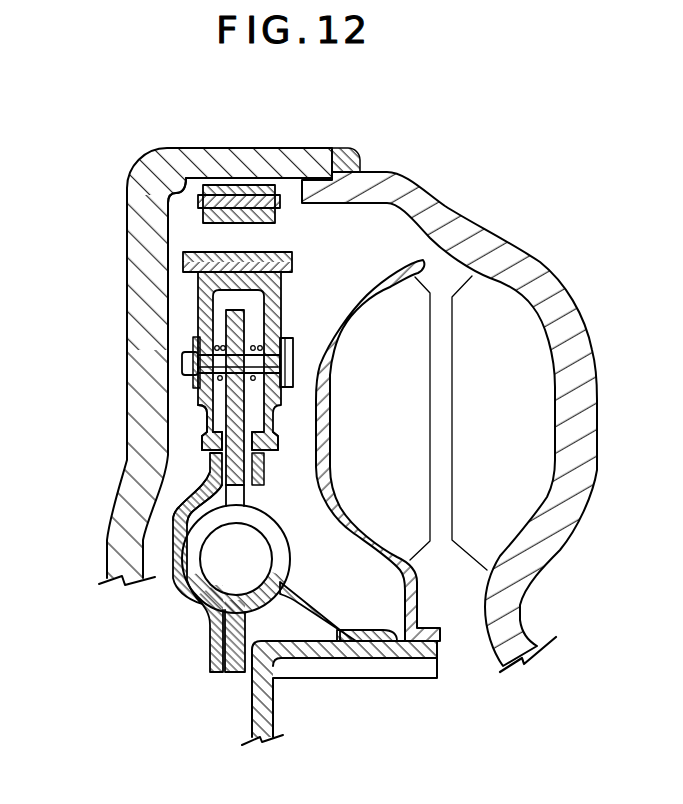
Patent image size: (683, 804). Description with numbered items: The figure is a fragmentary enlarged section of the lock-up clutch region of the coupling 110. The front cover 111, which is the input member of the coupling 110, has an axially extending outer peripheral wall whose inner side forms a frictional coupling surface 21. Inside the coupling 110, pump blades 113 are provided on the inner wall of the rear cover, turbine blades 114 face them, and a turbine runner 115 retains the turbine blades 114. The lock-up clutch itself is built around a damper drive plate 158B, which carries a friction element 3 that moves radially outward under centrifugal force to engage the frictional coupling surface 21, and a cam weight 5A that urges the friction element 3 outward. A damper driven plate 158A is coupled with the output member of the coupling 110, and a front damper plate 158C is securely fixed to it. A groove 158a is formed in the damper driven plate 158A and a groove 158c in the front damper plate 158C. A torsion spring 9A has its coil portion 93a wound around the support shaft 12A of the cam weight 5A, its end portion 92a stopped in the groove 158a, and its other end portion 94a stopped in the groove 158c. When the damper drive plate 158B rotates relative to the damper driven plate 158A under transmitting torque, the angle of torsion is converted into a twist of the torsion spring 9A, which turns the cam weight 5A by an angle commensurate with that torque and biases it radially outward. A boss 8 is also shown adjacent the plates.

The front cover 111 is at (217, 160).
The friction element 3 is at (296, 196).
The frictional coupling surface 21 is at (130, 196).
The coupling 110 is at (536, 244).
The turbine runner 115 is at (391, 267).
The cam weight 5A is at (284, 296).
The support shaft 12A is at (130, 302).
The coil portion 93a is at (196, 347).
The torsion spring 9A is at (184, 359).
The groove 158a is at (203, 411).
The end portion 94a is at (205, 437).
The groove 158c is at (208, 449).
The front damper plate 158C is at (193, 488).
The damper drive plate 158B is at (174, 507).
The end portion 92a is at (273, 451).
The boss 8 is at (203, 586).
The damper driven plate 158A is at (305, 593).
The turbine blades 114 is at (400, 419).
The pump blades 113 is at (510, 419).